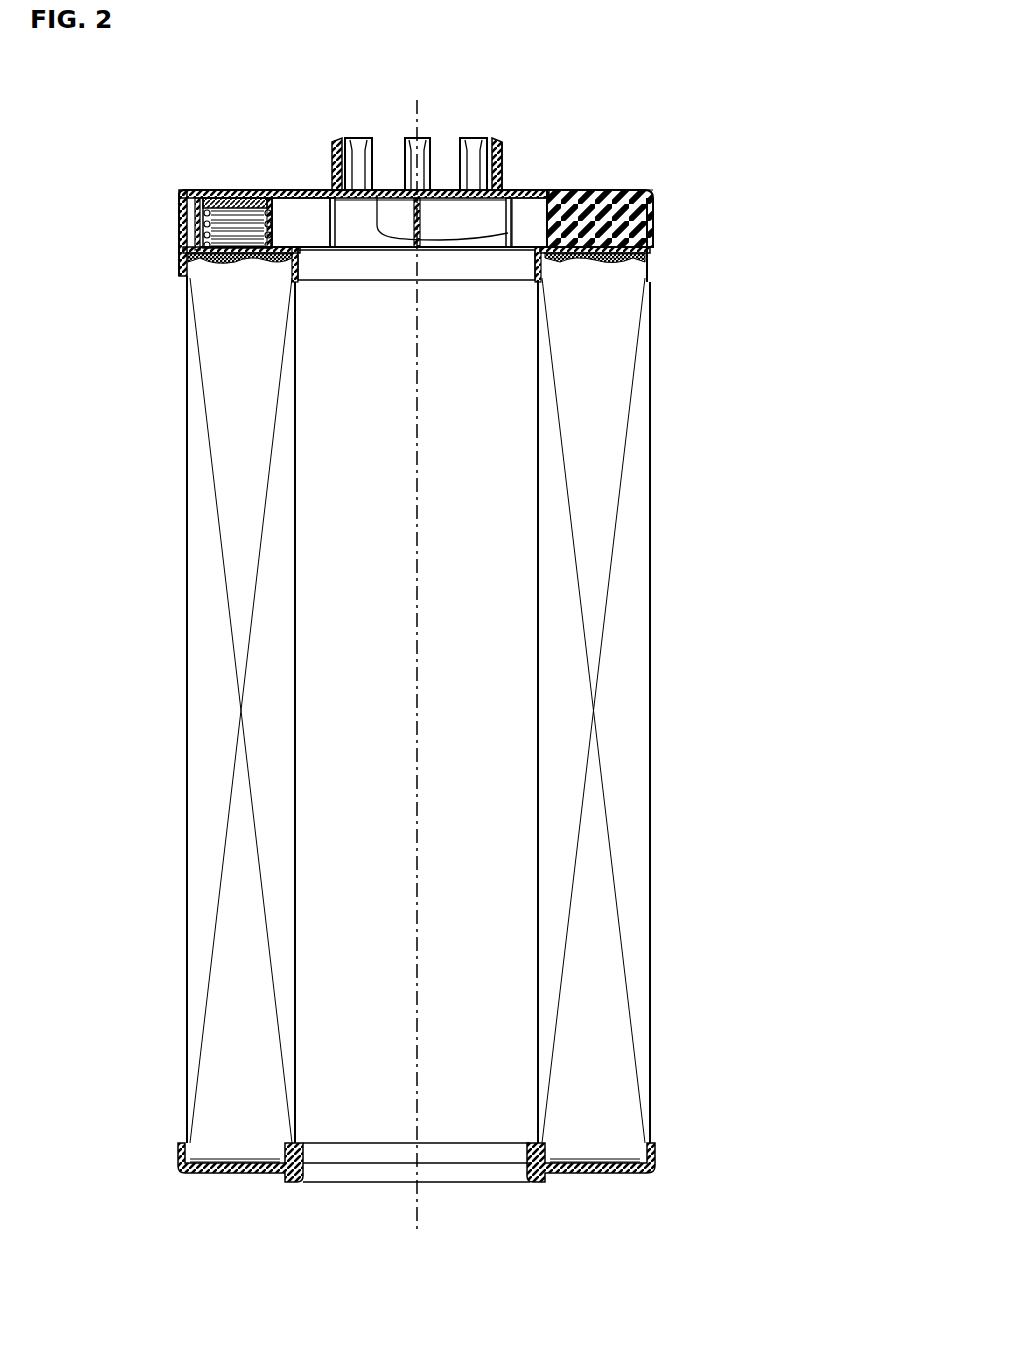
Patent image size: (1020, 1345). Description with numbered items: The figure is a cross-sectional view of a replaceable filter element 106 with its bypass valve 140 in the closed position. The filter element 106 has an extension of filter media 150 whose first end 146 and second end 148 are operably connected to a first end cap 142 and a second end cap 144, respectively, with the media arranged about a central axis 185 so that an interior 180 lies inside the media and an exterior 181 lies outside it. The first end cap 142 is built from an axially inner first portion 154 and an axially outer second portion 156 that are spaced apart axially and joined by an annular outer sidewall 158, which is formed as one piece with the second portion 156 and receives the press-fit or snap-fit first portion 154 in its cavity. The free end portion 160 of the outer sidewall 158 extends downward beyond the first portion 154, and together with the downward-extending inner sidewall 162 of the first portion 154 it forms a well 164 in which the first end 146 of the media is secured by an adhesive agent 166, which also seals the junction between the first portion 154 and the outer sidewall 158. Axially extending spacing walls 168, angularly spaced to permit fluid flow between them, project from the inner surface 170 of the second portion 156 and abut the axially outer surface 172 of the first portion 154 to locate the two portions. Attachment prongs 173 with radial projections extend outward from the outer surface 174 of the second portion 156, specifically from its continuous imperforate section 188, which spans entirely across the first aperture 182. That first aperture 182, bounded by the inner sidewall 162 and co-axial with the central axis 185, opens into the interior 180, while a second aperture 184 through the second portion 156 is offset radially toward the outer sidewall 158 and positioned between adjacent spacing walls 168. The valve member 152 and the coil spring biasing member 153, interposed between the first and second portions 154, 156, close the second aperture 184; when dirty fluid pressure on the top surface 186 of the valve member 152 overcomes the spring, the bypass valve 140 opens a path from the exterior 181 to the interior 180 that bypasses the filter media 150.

The filter element 106 is at (695, 565).
The bypass valve 140 is at (267, 172).
The first end cap 142 is at (773, 160).
The second end cap 144 is at (658, 1194).
The first end of filter media 146 is at (630, 292).
The second end of filter media 148 is at (630, 1150).
The filter media 150 is at (630, 886).
The valve member 152 is at (217, 193).
The biasing member 153 is at (187, 210).
The first portion 154 is at (243, 262).
The second portion 156 is at (305, 193).
The outer sidewall 158 is at (185, 245).
The free end portion 160 is at (161, 271).
The inner sidewall 162 is at (303, 263).
The well 164 is at (208, 305).
The adhesive agent 166 is at (213, 263).
The spacing walls 168 is at (637, 218).
The inner surface 170 is at (283, 232).
The axially outer surface 172 is at (320, 198).
The attachment prongs 173 is at (505, 150).
The outer surface 174 is at (320, 193).
The interior of filter media 180 is at (361, 739).
The exterior of filter media 181 is at (161, 487).
The first aperture 182 is at (503, 268).
The second aperture 184 is at (257, 193).
The central axis 185 is at (420, 1220).
The top surface 186 is at (243, 193).
The imperforate section 188 is at (453, 193).